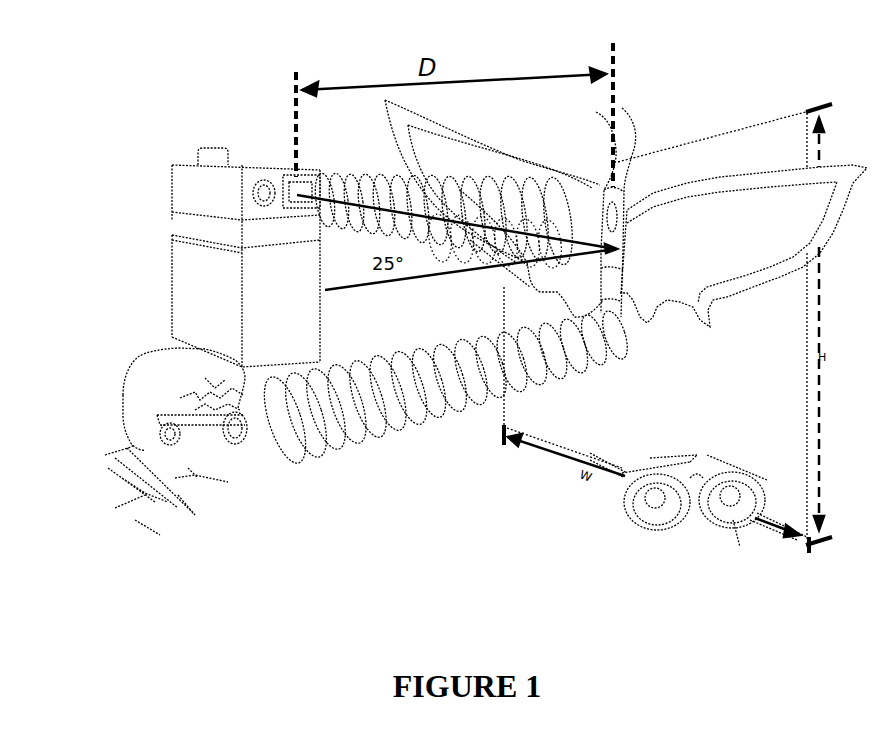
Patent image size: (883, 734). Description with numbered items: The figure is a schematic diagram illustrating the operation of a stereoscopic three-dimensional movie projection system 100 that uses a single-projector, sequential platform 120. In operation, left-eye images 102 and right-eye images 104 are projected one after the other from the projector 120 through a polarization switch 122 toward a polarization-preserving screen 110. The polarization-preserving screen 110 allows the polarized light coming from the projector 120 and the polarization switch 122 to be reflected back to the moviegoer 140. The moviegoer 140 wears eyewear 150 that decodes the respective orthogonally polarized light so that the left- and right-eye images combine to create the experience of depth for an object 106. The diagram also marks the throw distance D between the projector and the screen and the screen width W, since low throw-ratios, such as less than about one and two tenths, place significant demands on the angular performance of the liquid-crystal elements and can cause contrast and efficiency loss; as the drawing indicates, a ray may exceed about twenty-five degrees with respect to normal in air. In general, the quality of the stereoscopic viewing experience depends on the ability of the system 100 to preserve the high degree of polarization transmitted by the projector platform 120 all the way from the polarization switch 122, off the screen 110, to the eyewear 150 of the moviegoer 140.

The stereoscopic three-dimensional movie projection system 100 is at (272, 114).
The left-eye images 102 is at (257, 343).
The right-eye images 104 is at (333, 450).
The object 106 is at (497, 138).
The polarization-preserving screen 110 is at (712, 150).
The single-projector (sequential) platform 120 is at (178, 185).
The polarization switch 122 is at (300, 173).
The moviegoer 140 is at (125, 388).
The eyewear 150 is at (213, 420).